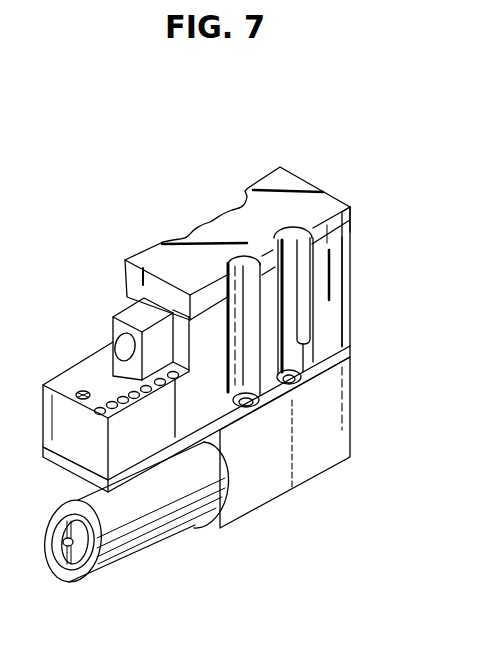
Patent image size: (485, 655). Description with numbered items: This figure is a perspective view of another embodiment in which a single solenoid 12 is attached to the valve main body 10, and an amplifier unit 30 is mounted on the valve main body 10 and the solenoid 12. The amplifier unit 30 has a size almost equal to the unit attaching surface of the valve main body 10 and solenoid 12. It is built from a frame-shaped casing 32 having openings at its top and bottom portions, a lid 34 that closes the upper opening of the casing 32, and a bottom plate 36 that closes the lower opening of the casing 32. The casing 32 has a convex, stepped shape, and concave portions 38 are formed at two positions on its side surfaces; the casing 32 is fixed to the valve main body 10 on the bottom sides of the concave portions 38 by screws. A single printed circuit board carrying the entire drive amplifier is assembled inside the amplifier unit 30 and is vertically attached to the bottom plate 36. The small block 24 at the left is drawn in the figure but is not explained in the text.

The valve main body 10 is at (316, 445).
The solenoid 12 is at (147, 517).
The solenoid 24 is at (124, 346).
The amplifier unit 30 is at (353, 296).
The casing 32 is at (213, 318).
The lid 34 is at (327, 205).
The bottom plate 36 is at (345, 352).
The concave portions 38 is at (240, 206).